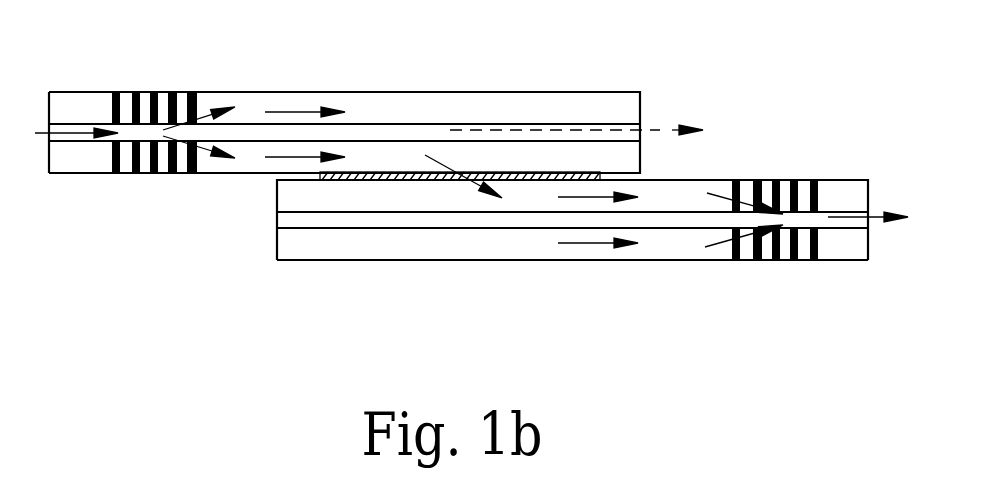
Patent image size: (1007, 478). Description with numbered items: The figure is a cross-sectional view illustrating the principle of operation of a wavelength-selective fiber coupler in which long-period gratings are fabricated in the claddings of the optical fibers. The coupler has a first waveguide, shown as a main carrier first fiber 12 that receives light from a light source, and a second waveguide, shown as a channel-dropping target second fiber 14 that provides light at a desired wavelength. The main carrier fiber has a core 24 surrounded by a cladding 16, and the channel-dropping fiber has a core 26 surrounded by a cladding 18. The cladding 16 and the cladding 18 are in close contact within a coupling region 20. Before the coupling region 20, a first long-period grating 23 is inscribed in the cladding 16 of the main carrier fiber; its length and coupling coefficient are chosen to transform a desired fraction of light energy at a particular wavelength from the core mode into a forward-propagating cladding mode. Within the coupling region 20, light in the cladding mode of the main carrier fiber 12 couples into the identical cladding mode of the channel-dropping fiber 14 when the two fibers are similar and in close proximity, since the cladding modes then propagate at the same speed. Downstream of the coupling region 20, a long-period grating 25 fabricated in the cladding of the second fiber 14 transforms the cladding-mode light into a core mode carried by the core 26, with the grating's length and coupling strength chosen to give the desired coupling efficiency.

The main carrier first fiber 12 is at (282, 90).
The channel-dropping target second fiber 14 is at (462, 260).
The cladding of the main carrier fiber 16 is at (89, 108).
The cladding of the channel-dropping fiber 18 is at (675, 187).
The coupling region 20 is at (347, 182).
The first long-period grating 23 is at (162, 158).
The core of the main carrier fiber 24 is at (382, 133).
The long-period grating 25 is at (783, 245).
The core of the second fiber 26 is at (352, 220).